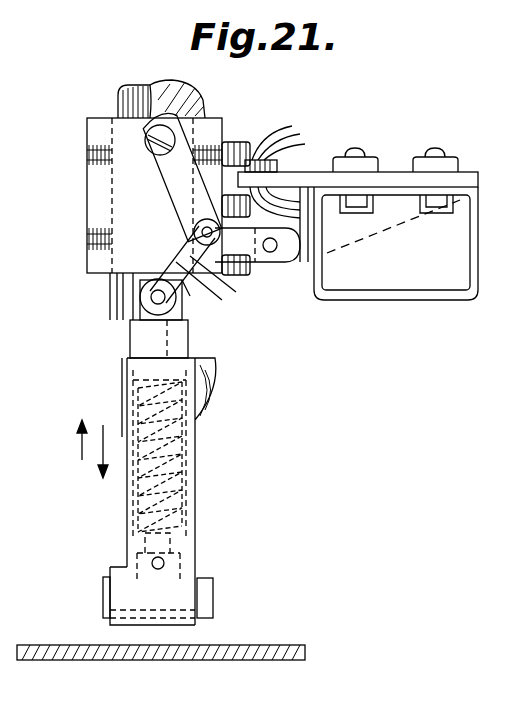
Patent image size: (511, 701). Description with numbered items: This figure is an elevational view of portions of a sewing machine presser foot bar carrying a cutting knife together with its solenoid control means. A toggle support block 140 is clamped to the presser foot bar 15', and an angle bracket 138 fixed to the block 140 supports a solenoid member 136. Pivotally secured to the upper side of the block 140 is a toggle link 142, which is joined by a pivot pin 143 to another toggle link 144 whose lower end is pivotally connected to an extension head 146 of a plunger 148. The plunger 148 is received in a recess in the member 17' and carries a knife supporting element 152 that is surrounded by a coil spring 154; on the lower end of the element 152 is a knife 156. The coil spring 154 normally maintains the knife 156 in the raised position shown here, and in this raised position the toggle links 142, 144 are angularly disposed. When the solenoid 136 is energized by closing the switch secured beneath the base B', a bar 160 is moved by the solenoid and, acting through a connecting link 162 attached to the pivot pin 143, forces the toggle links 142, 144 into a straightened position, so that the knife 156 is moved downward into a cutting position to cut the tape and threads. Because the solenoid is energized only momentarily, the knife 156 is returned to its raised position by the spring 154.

The presser foot bar 15' is at (179, 99).
The member 17' is at (184, 491).
The solenoid member 136 is at (418, 272).
The angle bracket 138 is at (312, 173).
The toggle support block 140 is at (125, 190).
The toggle link 142 is at (178, 181).
The pivot pin 143 is at (200, 233).
The toggle link 144 is at (195, 270).
The extension head 146 is at (143, 306).
The plunger 148 is at (187, 342).
The knife supporting element 152 is at (190, 462).
The coil spring 154 is at (178, 490).
The knife 156 is at (205, 590).
The bar 160 is at (307, 252).
The connecting link 162 is at (258, 176).
The base B' is at (161, 634).